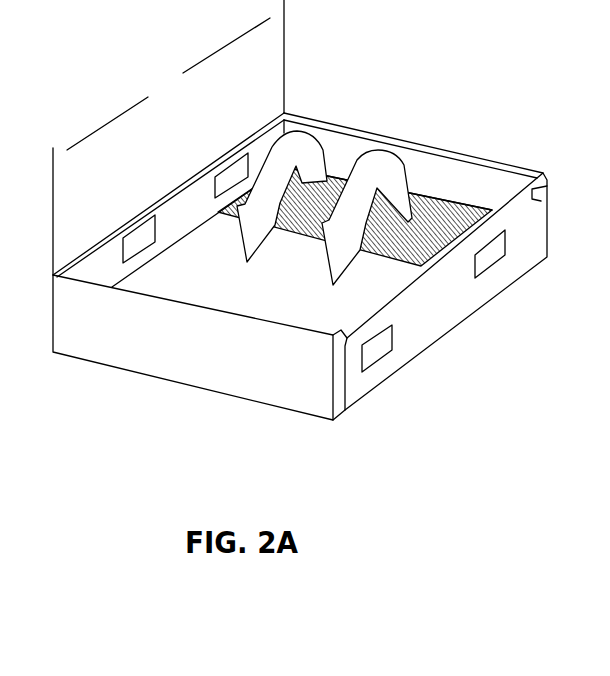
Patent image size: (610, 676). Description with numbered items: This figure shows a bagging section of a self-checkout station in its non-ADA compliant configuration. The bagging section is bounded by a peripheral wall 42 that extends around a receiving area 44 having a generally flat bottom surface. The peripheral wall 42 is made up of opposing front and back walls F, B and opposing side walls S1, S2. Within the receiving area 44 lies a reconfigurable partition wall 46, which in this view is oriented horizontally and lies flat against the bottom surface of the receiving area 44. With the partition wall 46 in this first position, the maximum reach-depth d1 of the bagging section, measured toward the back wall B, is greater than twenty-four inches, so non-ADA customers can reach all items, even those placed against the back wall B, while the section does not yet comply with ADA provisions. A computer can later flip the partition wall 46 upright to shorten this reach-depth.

The peripheral wall 42 is at (325, 225).
The receiving area 44 is at (255, 291).
The partition wall 46 is at (448, 214).
The back wall B is at (432, 145).
The front wall F is at (185, 360).
The side wall S1 is at (440, 296).
The side wall S2 is at (152, 208).
The maximum reach-depth d1 is at (168, 137).